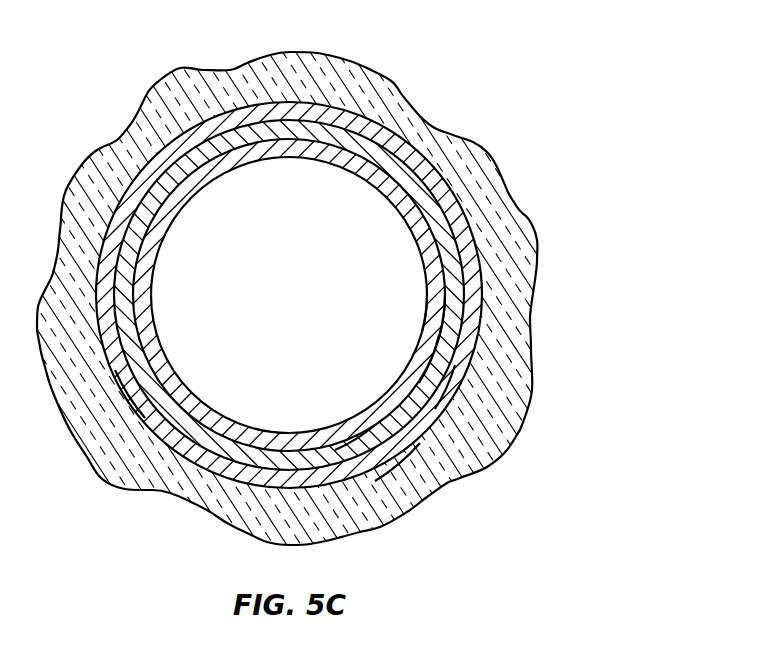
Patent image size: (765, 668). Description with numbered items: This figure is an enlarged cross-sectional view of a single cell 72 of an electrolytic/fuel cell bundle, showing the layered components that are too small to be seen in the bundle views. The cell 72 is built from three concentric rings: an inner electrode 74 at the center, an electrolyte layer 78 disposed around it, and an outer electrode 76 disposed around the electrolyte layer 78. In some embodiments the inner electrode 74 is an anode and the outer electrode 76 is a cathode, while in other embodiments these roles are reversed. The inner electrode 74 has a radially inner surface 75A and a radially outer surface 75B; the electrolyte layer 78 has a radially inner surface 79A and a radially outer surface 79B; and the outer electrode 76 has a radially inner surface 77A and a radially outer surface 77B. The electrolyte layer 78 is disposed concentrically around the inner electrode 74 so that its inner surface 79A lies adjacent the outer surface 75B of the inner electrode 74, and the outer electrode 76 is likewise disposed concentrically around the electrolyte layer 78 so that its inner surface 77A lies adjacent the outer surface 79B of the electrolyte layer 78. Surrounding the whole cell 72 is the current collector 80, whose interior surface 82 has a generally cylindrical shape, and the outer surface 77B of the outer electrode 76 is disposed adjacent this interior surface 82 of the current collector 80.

The cell 72 is at (328, 295).
The inner electrode 74 is at (412, 215).
The outer electrode 76 is at (387, 143).
The electrolyte layer 78 is at (403, 177).
The current collector 80 is at (192, 113).
The interior surface of the current collector 82 is at (127, 397).
The radially inner surface of the inner electrode 75A is at (428, 325).
The radially outer surface of the inner electrode 75B is at (446, 333).
The radially inner surface of the outer electrode 77A is at (352, 440).
The radially outer surface of the outer electrode 77B is at (391, 464).
The radially inner surface of the electrolyte layer 79A is at (418, 383).
The radially outer surface of the electrolyte layer 79B is at (437, 395).